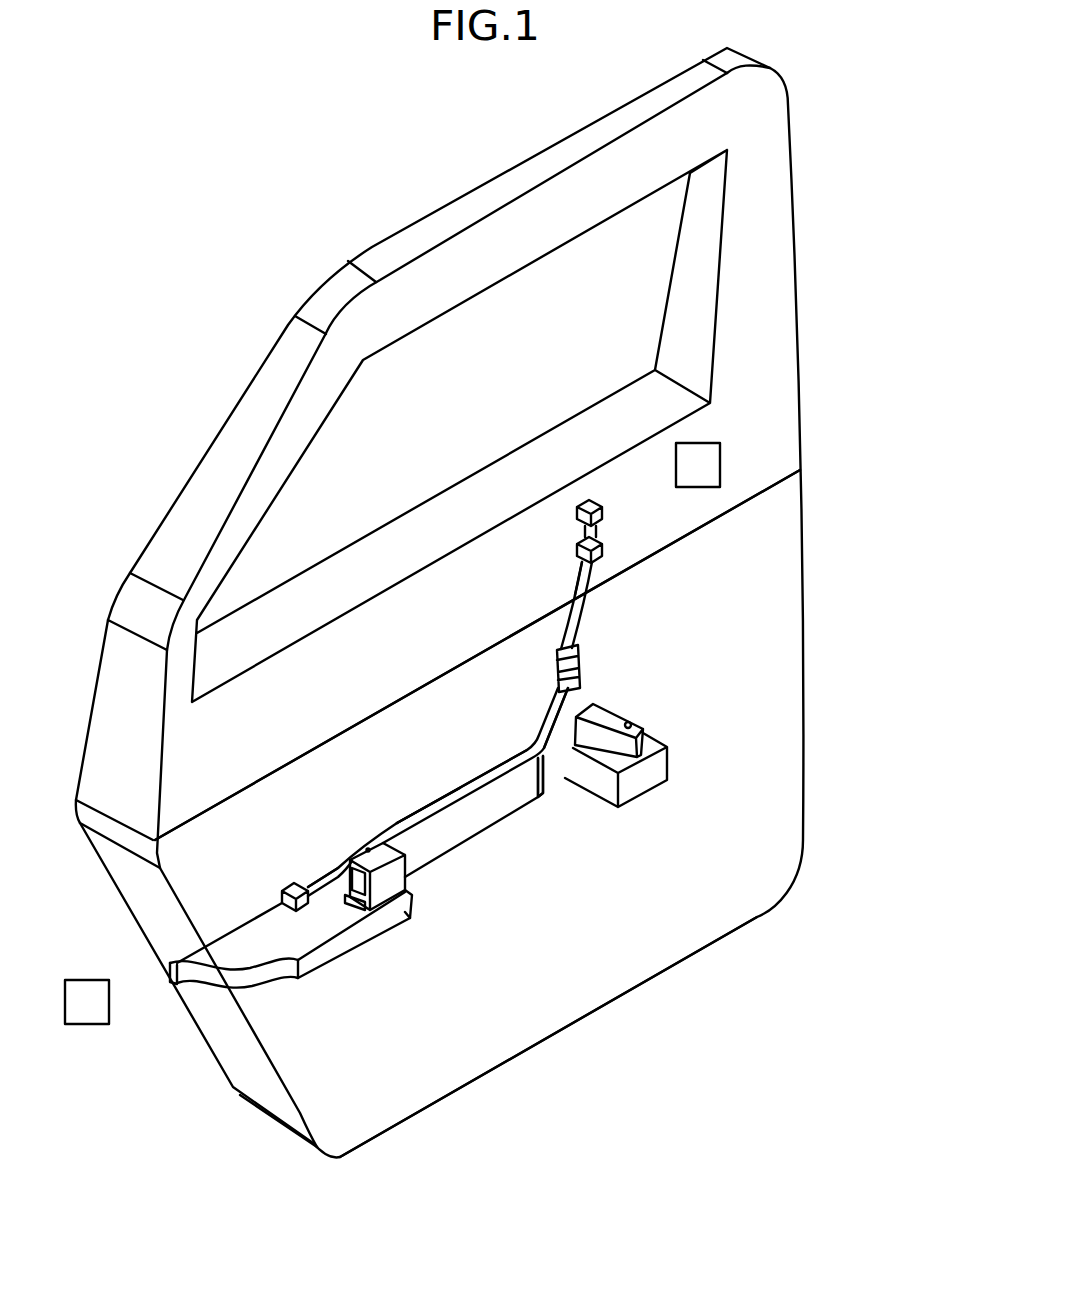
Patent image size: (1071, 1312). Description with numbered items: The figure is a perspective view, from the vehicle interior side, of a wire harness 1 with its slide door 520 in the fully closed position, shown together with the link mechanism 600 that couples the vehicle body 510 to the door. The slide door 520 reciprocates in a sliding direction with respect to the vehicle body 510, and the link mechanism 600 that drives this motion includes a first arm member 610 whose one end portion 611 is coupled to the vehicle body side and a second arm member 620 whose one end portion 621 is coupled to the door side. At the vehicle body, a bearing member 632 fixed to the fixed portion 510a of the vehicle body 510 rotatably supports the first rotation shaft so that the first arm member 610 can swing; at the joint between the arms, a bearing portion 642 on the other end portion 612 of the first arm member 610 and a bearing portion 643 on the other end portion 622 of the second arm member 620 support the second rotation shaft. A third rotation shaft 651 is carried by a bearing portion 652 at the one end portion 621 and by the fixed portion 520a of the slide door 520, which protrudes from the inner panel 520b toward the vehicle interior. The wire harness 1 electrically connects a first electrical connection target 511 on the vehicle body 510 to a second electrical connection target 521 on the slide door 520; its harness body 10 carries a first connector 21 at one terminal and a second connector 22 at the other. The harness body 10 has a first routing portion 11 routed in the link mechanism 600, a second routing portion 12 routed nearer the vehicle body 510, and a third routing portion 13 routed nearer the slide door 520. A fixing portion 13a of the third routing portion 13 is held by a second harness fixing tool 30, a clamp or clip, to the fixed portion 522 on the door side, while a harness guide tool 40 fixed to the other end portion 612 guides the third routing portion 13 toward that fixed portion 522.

The wire harness 1 is at (493, 677).
The harness body 10 is at (448, 766).
The first routing portion 11 is at (413, 810).
The second routing portion 12 is at (317, 877).
The fixing portion 13a is at (753, 500).
The third routing portion 13 is at (597, 543).
The first connector 21 is at (282, 910).
The second connector 22 is at (588, 495).
The second harness fixing tool 30 is at (603, 563).
The harness guide tool 40 is at (580, 663).
The vehicle body 510 is at (343, 945).
The fixed portion of the vehicle body 510a is at (395, 1020).
The first electrical connection target 511 is at (90, 980).
The slide door 520 is at (429, 162).
The fixed portion of the slide door 520a is at (652, 745).
The inner panel 520b is at (345, 1113).
The second electrical connection target 521 is at (720, 458).
The fixed portion on the side of the slide door 522 is at (605, 577).
The link mechanism 600 is at (541, 619).
The first arm member 610 is at (482, 858).
The one end portion of the first arm member 611 is at (340, 875).
The other end portion of the first arm member 612 is at (577, 698).
The second arm member 620 is at (756, 819).
The one end portion of the second arm member 621 is at (624, 742).
The other end portion of the second arm member 622 is at (565, 760).
The bearing member 632 is at (385, 887).
The bearing portion 642 is at (746, 708).
The bearing portion 643 is at (709, 866).
The third rotation shaft 651 is at (628, 721).
The bearing portion 652 is at (761, 752).